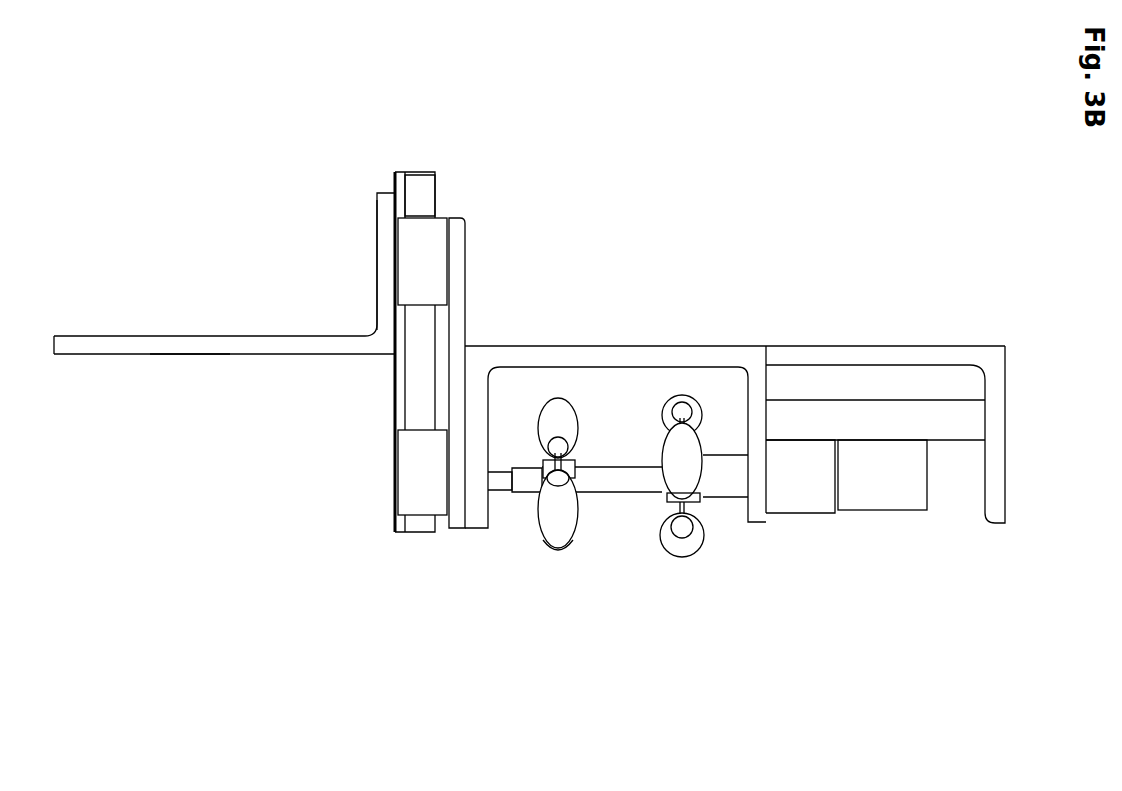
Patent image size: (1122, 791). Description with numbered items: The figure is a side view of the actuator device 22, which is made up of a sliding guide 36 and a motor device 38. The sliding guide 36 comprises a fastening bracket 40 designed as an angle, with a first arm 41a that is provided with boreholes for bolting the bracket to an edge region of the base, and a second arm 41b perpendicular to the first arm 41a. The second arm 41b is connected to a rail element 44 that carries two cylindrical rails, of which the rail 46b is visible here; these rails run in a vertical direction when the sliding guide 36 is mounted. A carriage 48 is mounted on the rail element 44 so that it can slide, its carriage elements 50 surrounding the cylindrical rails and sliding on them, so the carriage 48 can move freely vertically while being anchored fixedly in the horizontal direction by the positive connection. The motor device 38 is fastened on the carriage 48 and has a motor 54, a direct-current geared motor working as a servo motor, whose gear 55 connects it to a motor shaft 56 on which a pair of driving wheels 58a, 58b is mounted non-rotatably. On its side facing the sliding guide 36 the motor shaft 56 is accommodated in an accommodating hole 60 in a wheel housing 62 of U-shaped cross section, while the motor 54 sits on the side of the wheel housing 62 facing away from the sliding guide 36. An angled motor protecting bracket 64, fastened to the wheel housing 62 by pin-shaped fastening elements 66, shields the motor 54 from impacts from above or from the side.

The actuator device 22 is at (965, 100).
The sliding guide 36 is at (403, 105).
The motor device 38 is at (747, 213).
The fastening bracket 40 is at (104, 343).
The first arm 41a is at (190, 357).
The second arm 41b is at (382, 290).
The rail element 44 is at (394, 174).
The cylindrical rail 46b is at (425, 185).
The carriage 48 is at (467, 290).
The carriage elements 50 is at (410, 245).
The motor 54 is at (885, 497).
The gear 55 is at (803, 500).
The motor shaft 56 is at (625, 482).
The driving wheel 58a is at (555, 567).
The driving wheel 58b is at (683, 563).
The accommodating hole 60 is at (492, 492).
The wheel housing 62 is at (698, 360).
The motor protecting bracket 64 is at (968, 355).
The pin-shaped fastening elements 66 is at (965, 422).